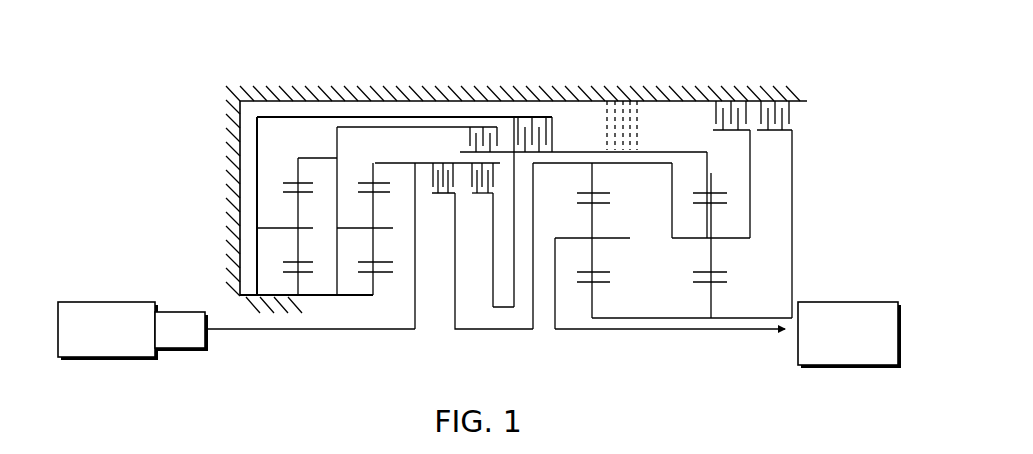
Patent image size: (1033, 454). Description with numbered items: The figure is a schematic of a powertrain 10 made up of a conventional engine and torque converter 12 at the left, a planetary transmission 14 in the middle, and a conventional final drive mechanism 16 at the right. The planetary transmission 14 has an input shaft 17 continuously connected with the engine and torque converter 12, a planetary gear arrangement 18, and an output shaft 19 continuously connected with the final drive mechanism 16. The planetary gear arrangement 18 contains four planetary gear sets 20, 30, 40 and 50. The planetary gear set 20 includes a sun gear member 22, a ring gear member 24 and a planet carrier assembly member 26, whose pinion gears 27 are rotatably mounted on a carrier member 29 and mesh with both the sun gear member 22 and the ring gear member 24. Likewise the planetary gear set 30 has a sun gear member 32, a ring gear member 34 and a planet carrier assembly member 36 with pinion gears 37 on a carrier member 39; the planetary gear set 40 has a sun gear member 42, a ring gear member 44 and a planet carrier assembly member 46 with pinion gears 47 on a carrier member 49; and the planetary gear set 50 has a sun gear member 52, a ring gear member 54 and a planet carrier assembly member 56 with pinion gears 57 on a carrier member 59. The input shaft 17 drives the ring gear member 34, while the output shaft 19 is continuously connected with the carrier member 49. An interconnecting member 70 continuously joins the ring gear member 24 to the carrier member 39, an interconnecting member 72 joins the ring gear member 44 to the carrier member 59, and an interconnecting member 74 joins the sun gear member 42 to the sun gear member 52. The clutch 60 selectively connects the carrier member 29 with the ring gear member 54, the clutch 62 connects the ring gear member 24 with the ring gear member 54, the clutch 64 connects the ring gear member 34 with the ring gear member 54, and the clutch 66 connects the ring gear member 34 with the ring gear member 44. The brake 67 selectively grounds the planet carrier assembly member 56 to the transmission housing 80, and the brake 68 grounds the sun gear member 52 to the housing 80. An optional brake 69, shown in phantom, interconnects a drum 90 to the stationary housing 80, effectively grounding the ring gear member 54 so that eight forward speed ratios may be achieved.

The powertrain 10 is at (205, 113).
The engine and torque converter 12 is at (140, 270).
The planetary transmission 14 is at (312, 40).
The final drive mechanism 16 is at (815, 270).
The input shaft 17 is at (228, 332).
The planetary gear arrangement 18 is at (430, 42).
The output shaft 19 is at (740, 330).
The planetary gear set 20 is at (288, 257).
The sun gear member 22 is at (320, 300).
The ring gear member 24 is at (298, 178).
The planet carrier assembly member 26 is at (284, 238).
The pinion gears 27 is at (298, 212).
The carrier member 29 is at (309, 228).
The planetary gear set 30 is at (394, 248).
The sun gear member 32 is at (390, 300).
The ring gear member 34 is at (368, 180).
The planet carrier assembly member 36 is at (359, 238).
The pinion gears 37 is at (373, 214).
The carrier member 39 is at (383, 228).
The planetary gear set 40 is at (594, 265).
The sun gear member 42 is at (598, 283).
The ring gear member 44 is at (590, 192).
The planet carrier assembly member 46 is at (568, 246).
The pinion gears 47 is at (590, 203).
The carrier member 49 is at (600, 238).
The planetary gear set 50 is at (700, 258).
The sun gear member 52 is at (718, 283).
The ring gear member 54 is at (708, 190).
The planet carrier assembly member 56 is at (688, 250).
The pinion gears 57 is at (710, 240).
The carrier member 59 is at (728, 238).
The clutch 60 is at (556, 116).
The clutch 62 is at (460, 140).
The clutch 64 is at (466, 182).
The clutch 66 is at (424, 182).
The stationary type clutch or brake 67 is at (712, 114).
The stationary type clutch or brake 68 is at (796, 118).
The optional stationary type clutch or brake 69 is at (607, 124).
The interconnecting member 70 is at (332, 157).
The interconnecting member 72 is at (636, 165).
The interconnecting member 74 is at (668, 318).
The transmission housing 80 is at (750, 97).
The drum 90 is at (690, 152).